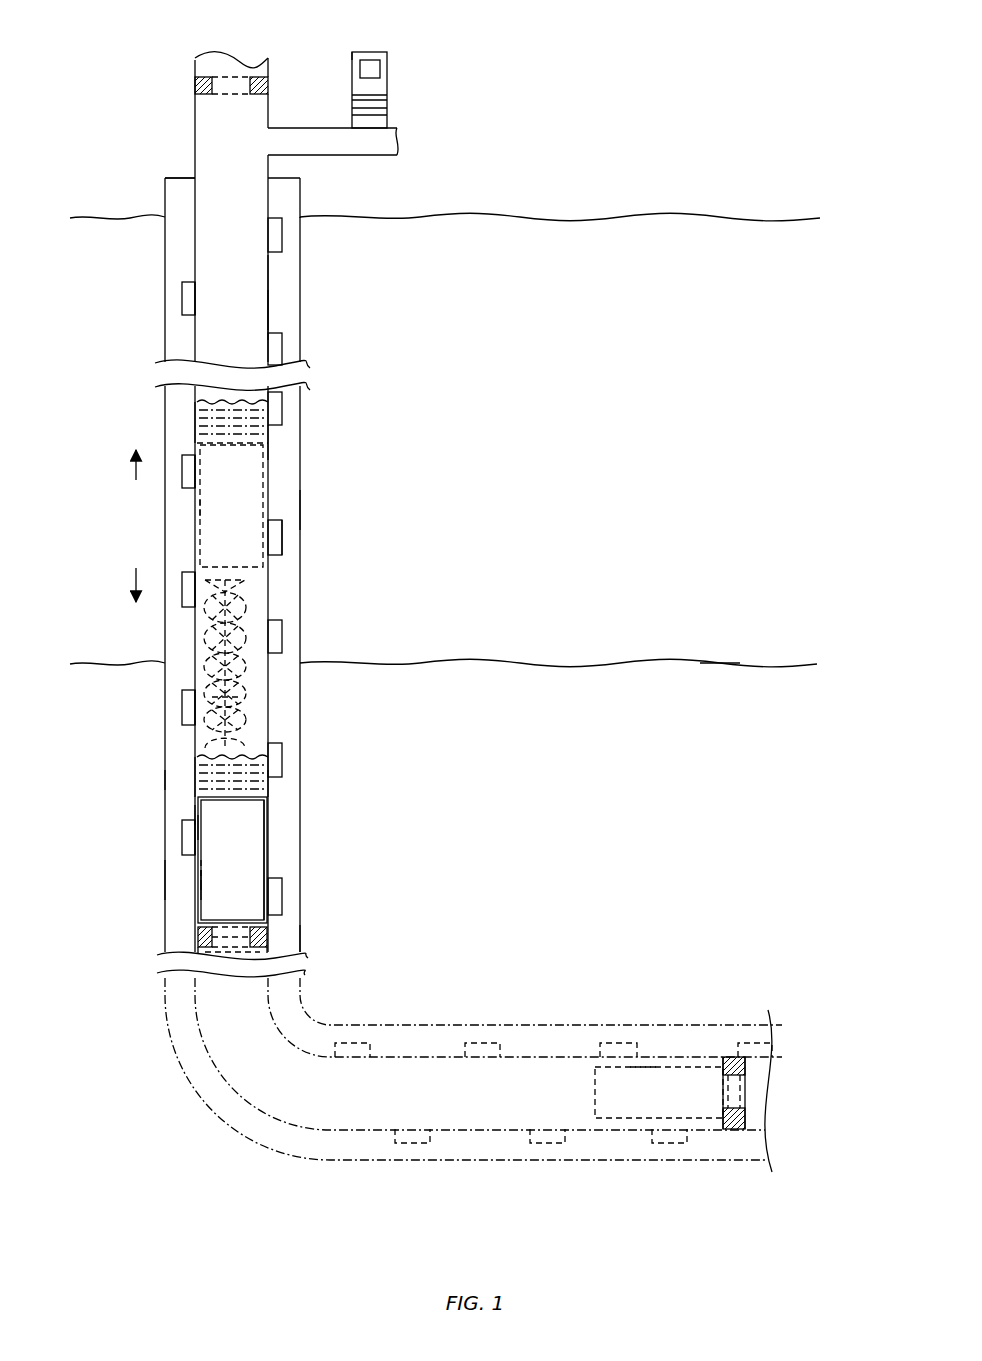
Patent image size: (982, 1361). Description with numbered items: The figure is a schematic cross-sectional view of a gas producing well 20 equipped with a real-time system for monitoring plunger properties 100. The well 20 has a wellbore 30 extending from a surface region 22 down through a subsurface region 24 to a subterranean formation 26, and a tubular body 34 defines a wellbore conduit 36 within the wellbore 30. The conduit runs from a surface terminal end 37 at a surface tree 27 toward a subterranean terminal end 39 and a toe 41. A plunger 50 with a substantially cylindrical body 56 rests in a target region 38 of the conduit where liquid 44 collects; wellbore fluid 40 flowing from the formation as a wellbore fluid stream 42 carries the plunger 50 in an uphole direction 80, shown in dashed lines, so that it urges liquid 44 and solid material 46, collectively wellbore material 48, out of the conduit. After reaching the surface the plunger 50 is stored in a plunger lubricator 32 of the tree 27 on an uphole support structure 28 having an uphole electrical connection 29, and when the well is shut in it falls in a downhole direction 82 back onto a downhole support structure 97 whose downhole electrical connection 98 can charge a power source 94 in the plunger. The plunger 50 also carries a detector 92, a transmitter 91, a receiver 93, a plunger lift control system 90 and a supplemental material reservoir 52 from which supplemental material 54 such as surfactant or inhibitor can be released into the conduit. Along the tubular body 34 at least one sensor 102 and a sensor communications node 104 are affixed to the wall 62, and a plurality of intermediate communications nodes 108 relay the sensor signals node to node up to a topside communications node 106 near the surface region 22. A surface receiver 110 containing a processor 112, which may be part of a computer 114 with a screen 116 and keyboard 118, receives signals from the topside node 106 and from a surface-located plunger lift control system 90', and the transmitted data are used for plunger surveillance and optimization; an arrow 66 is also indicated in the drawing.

The gas producing well 20 is at (135, 55).
The surface region 22 is at (640, 131).
The subsurface region 24 is at (640, 431).
The subterranean formation 26 is at (637, 683).
The surface tree 27 is at (165, 107).
The uphole support structure 28 is at (280, 70).
The uphole electrical connection 29 is at (258, 86).
The wellbore 30 is at (178, 276).
The plunger lubricator 32 is at (195, 143).
The tubular body 34 is at (268, 283).
The wellbore conduit 36 is at (250, 314).
The surface terminal end 37 is at (150, 196).
The target region 38 is at (140, 873).
The subterranean terminal end 39 is at (192, 934).
The wellbore fluid 40 is at (693, 683).
The toe 41 is at (727, 1012).
The wellbore fluid stream 42 is at (226, 697).
The liquid 44 is at (275, 463).
The solid material 46 is at (268, 425).
The wellbore material 48 is at (205, 425).
The plunger 50 is at (263, 478).
The supplemental material reservoir 52 is at (170, 780).
The supplemental material 54 is at (250, 636).
The substantially cylindrical body 56 is at (200, 510).
The wall 62 is at (268, 829).
The sensing direction 66 is at (316, 509).
The uphole direction 80 is at (136, 468).
The downhole direction 82 is at (136, 575).
The plunger lift control system 90 is at (162, 824).
The plunger lift control system 90' is at (397, 100).
The transmitter 91 is at (190, 815).
The detector 92 is at (200, 880).
The receiver 93 is at (157, 933).
The power source 94 is at (200, 885).
The downhole support structure 97 is at (200, 932).
The downhole electrical connection 98 is at (305, 957).
The real-time system for monitoring plunger properties 100 is at (290, 534).
The sensor 102 is at (183, 318).
The sensor communications node 104 is at (185, 290).
The topside communications node 106 is at (282, 235).
The intermediate communications node 108 is at (282, 355).
The receiver 110 is at (387, 52).
The processor 112 is at (387, 86).
The computer 114 is at (352, 52).
The screen 116 is at (376, 70).
The keyboard 118 is at (397, 131).